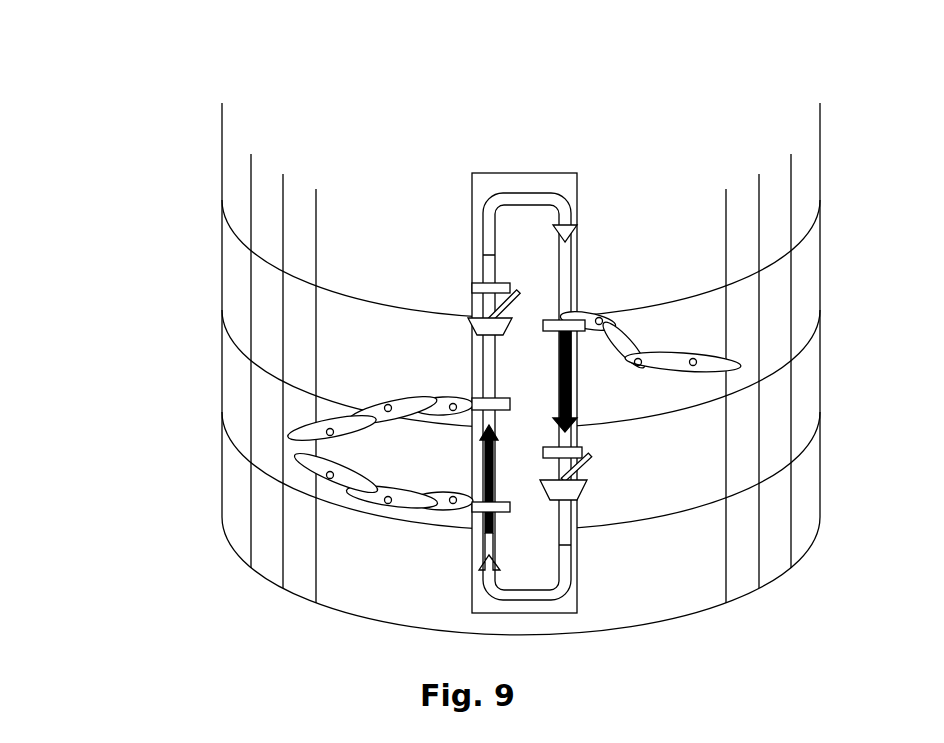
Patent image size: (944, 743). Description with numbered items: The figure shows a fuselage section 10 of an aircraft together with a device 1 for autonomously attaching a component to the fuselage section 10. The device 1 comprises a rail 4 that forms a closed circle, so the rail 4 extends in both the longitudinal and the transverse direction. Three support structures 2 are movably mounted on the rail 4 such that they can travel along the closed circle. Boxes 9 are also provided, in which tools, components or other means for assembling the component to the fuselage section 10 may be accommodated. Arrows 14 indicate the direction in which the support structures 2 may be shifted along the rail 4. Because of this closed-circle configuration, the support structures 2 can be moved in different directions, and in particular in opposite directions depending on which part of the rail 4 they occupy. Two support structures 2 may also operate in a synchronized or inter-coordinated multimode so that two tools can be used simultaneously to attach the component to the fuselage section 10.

The fuselage section 10 is at (188, 108).
The device 1 is at (536, 140).
The rail 4 is at (567, 265).
The arrows 14 is at (483, 468).
The boxes 9 is at (468, 323).
The support structures 2 is at (384, 382).